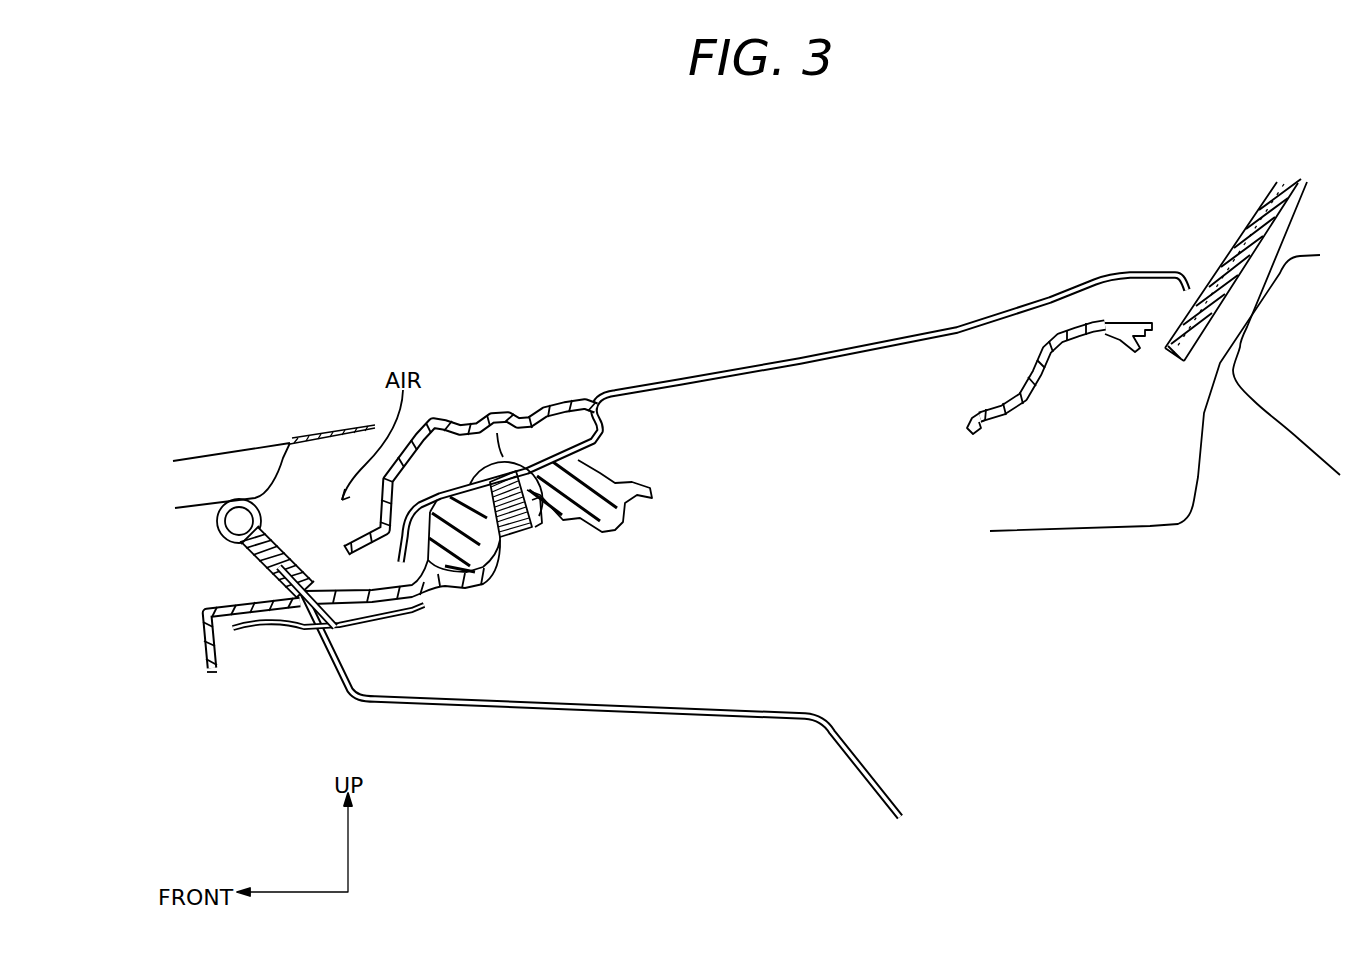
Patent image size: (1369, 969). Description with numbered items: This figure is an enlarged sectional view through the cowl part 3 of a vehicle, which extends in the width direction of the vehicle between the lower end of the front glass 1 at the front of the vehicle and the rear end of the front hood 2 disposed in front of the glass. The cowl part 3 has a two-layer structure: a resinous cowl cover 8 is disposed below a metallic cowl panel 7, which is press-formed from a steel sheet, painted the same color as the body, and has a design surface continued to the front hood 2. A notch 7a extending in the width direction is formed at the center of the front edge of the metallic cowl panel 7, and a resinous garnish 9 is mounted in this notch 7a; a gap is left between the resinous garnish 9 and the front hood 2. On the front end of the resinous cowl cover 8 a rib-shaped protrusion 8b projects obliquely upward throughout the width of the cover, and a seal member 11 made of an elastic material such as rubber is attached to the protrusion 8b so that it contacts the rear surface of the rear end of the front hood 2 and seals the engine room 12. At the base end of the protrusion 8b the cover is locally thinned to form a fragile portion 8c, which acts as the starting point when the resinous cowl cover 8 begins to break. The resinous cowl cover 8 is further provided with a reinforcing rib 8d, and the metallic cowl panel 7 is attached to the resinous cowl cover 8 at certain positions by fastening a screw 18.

The front glass 1 is at (1238, 234).
The front hood 2 is at (262, 445).
The cowl part 3 is at (718, 327).
The metallic cowl panel 7 is at (905, 338).
The notch 7a is at (600, 398).
The resinous cowl cover 8 is at (610, 536).
The protrusion 8b is at (322, 576).
The fragile portion 8c is at (300, 630).
The reinforcing rib 8d is at (417, 607).
The resinous garnish 9 is at (543, 405).
The seal member 11 is at (252, 574).
The engine room 12 is at (181, 674).
The screw 18 is at (488, 418).